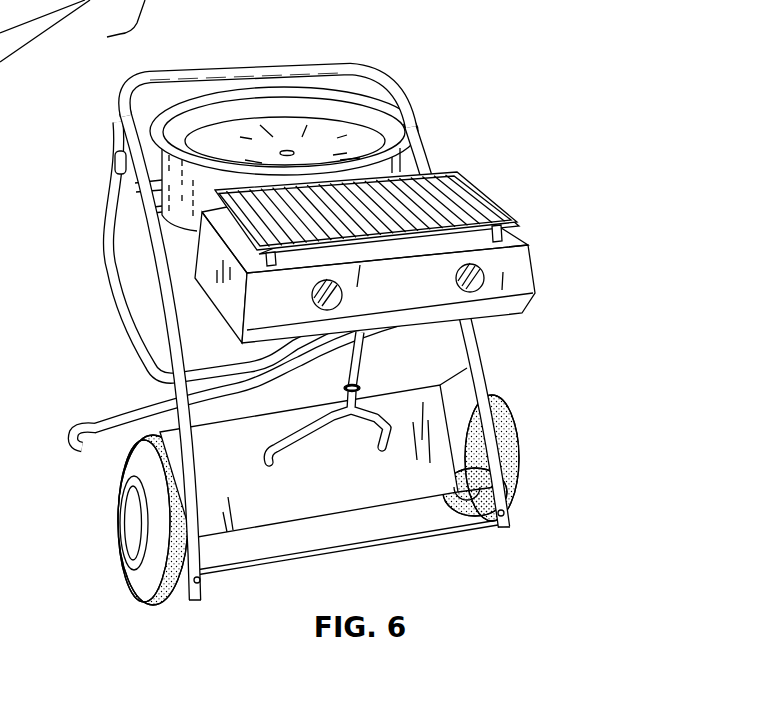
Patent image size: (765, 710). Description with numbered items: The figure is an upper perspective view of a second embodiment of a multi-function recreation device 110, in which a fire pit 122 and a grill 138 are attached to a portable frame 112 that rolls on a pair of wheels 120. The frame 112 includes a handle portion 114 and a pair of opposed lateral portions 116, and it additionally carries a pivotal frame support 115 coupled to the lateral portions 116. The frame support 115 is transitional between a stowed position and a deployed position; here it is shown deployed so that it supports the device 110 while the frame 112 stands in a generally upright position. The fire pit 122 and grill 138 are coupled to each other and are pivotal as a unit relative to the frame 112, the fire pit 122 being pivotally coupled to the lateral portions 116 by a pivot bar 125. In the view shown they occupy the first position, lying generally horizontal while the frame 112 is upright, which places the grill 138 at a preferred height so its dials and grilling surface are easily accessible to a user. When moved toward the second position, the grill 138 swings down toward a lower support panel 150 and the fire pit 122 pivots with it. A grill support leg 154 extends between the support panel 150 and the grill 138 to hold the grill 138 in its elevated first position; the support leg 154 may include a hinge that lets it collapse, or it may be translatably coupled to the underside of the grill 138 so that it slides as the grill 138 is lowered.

The device 110 is at (281, 323).
The frame 112 is at (267, 64).
The handle portion 114 is at (273, 66).
The pivotal frame support 115 is at (122, 292).
The pair of opposed lateral portions 116 is at (170, 342).
The pair of wheels 120 is at (133, 590).
The fire pit 122 is at (357, 100).
The pivot bar 125 is at (147, 202).
The grill 138 is at (474, 124).
The lower support panel 150 is at (375, 484).
The grill support leg 154 is at (373, 352).